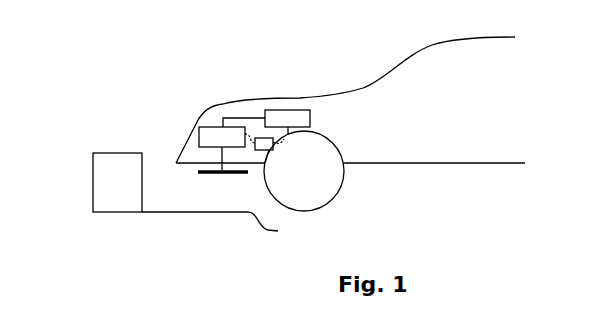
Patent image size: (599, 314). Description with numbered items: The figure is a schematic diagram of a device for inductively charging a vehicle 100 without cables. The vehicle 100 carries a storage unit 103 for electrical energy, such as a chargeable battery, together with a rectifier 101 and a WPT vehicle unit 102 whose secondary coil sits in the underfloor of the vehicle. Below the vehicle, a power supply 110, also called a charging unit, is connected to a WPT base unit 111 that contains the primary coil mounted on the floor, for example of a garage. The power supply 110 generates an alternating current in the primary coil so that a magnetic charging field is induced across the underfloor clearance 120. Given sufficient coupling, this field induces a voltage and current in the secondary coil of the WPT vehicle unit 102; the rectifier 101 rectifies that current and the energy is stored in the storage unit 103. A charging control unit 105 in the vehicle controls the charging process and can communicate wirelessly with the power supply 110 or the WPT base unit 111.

The vehicle 100 is at (388, 60).
The rectifier 101 is at (203, 133).
The WPT vehicle unit 102 is at (232, 175).
The storage unit 103 is at (278, 115).
The charging control unit 105 is at (257, 138).
The power supply 110 is at (100, 183).
The WPT base unit 111 is at (226, 225).
The underfloor clearance 120 is at (205, 190).